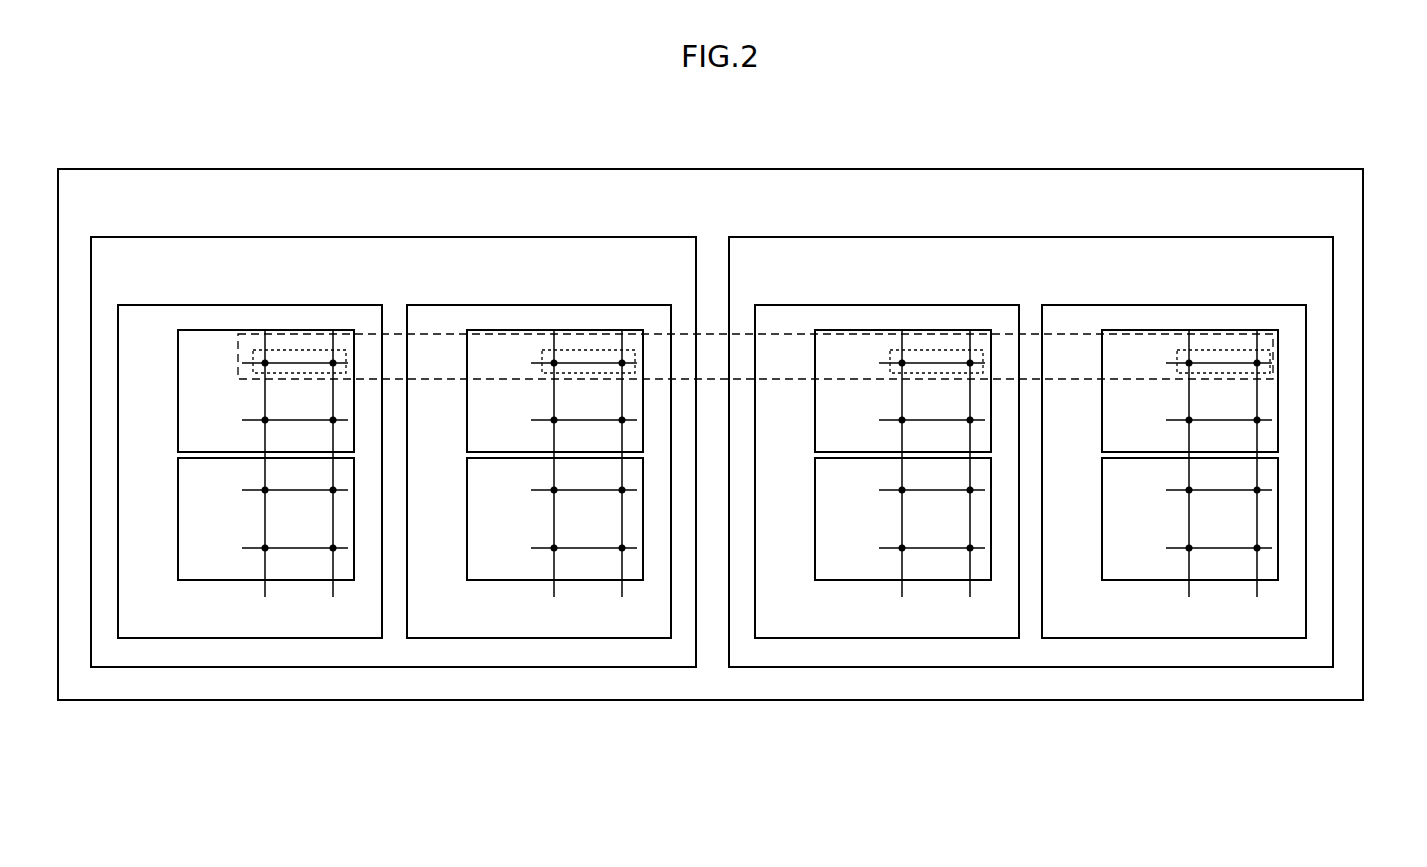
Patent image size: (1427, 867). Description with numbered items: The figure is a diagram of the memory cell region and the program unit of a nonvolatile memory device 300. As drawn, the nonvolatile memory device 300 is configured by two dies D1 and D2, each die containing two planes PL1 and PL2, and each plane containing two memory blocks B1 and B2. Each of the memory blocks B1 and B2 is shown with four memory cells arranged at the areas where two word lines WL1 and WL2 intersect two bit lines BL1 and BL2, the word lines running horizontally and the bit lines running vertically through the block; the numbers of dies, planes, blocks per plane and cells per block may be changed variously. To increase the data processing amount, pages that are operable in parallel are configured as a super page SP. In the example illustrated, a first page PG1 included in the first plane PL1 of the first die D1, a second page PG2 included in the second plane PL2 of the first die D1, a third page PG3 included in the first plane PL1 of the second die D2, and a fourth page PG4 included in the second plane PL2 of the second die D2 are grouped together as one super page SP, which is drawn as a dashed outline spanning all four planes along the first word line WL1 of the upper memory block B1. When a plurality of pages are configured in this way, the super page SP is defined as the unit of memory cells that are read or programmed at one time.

The nonvolatile memory device 300 is at (1253, 169).
The first die D1 is at (393, 438).
The second die D2 is at (1031, 438).
The first plane PL1 is at (568, 457).
The second plane PL2 is at (856, 457).
The first memory block B1 is at (711, 391).
The second memory block B2 is at (711, 519).
The first word line WL1 is at (732, 427).
The second word line WL2 is at (732, 485).
The first bit line BL1 is at (728, 477).
The second bit line BL2 is at (794, 477).
The first page PG1 is at (298, 352).
The second page PG2 is at (587, 352).
The third page PG3 is at (935, 352).
The fourth page PG4 is at (1222, 352).
The super page SP is at (1275, 353).